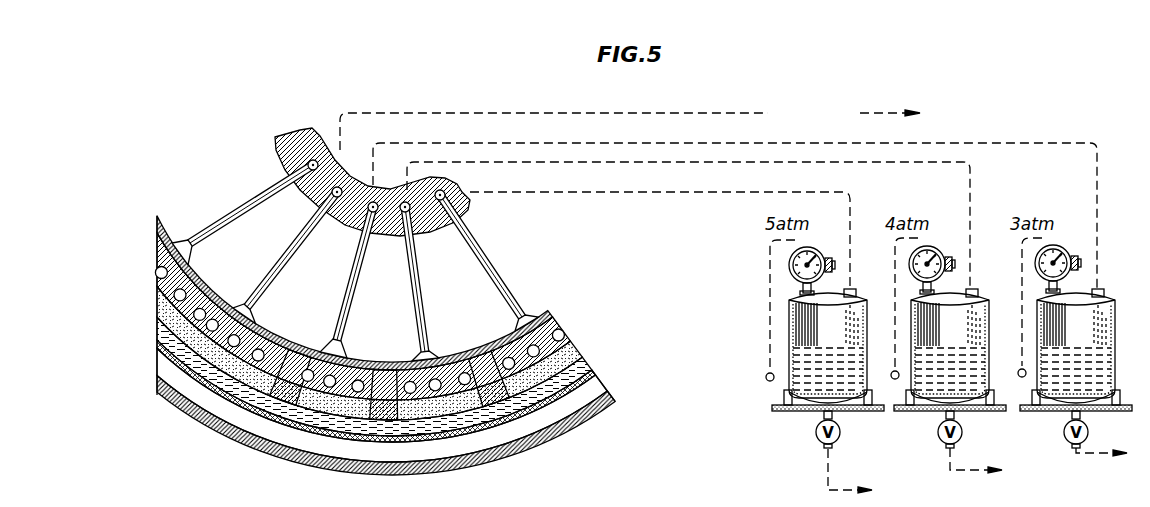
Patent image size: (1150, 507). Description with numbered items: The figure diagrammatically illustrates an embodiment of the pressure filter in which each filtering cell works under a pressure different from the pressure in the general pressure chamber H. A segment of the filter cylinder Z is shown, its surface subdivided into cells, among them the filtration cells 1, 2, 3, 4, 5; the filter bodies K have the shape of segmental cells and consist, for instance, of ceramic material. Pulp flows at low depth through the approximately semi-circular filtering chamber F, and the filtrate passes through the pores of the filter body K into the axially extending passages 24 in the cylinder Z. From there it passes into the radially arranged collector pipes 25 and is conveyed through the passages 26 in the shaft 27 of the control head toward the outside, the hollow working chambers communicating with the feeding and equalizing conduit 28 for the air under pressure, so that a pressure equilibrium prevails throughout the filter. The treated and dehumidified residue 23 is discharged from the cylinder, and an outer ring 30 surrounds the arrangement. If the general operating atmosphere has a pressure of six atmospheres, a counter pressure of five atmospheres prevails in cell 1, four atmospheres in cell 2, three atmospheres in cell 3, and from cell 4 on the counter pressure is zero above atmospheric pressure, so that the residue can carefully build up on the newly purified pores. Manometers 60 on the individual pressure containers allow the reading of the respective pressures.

The cell 1 is at (535, 326).
The cell width 2 is at (442, 356).
The cell 3 is at (332, 352).
The cell 4 is at (250, 304).
The cell 5 is at (180, 240).
The dehumidified solid residue 23 is at (500, 398).
The passages 24 is at (380, 375).
The collector pipes 25 is at (352, 283).
The passages 26 is at (585, 114).
The shaft 27 is at (283, 163).
The feeding and equalizing conduit 28 is at (770, 320).
The outer ring 30 is at (192, 408).
The manometers 60 is at (814, 250).
The filter body K is at (156, 292).
The filter cylinder Z is at (190, 272).
The pressure chamber H is at (322, 443).
The filtering chamber F is at (395, 432).